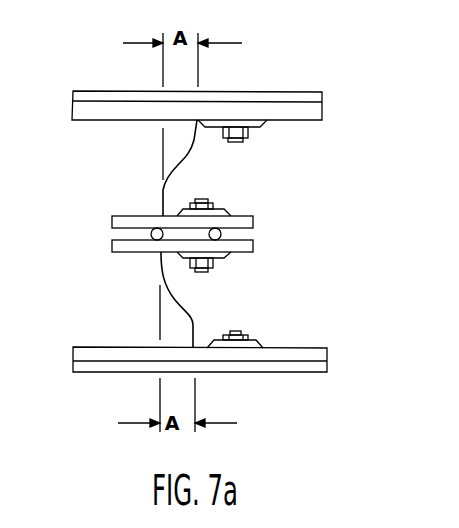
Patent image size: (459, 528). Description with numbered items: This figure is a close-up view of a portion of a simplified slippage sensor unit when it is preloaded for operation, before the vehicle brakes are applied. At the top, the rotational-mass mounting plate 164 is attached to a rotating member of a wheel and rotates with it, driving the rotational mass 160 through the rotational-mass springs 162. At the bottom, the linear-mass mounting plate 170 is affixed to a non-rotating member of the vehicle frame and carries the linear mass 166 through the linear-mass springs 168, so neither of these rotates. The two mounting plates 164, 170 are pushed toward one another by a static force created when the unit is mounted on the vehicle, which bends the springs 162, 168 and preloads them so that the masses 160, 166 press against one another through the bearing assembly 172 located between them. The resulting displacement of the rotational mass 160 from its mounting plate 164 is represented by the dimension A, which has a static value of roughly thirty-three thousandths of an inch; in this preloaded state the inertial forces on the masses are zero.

The rotational-mass mounting plate 164 is at (316, 92).
The rotational-mass springs 162 is at (178, 167).
The rotational mass 160 is at (253, 220).
The linear mass 166 is at (253, 245).
The bearing assembly 172 is at (150, 236).
The linear mass springs 168 is at (193, 322).
The linear mass mounting plate 170 is at (327, 366).